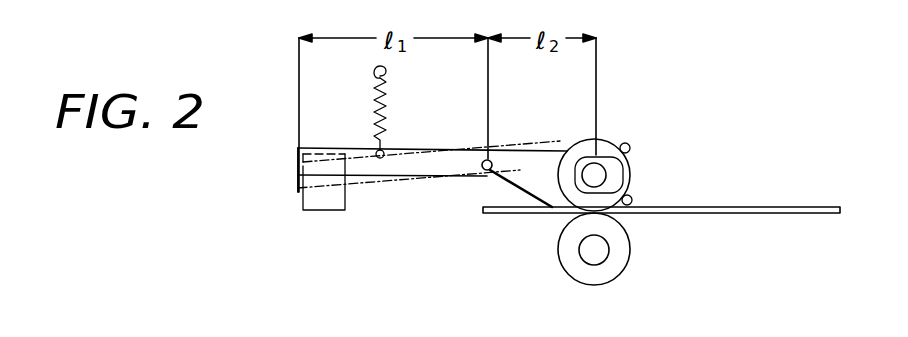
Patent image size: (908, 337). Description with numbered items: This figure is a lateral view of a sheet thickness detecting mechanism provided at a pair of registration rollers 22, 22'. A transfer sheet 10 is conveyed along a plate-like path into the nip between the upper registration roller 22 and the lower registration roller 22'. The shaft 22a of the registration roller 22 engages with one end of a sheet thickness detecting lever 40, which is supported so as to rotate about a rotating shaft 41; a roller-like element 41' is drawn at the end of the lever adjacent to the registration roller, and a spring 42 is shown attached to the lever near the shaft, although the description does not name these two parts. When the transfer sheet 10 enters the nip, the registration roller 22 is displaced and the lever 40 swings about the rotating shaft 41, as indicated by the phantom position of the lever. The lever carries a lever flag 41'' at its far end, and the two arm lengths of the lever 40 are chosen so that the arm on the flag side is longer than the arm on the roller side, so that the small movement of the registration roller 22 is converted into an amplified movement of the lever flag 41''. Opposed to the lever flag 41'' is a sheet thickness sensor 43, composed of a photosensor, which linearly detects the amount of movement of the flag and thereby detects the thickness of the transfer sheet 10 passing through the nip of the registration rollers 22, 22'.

The transfer sheet 10 is at (740, 205).
The registration roller 22 is at (633, 176).
The registration roller 22' is at (630, 249).
The shaft 22a is at (542, 205).
The sheet thickness detecting lever 40 is at (531, 146).
The rotating shaft 41 is at (470, 203).
The roller 41' is at (622, 155).
The lever flag 41'' is at (322, 139).
The spring 42 is at (390, 131).
The sheet thickness sensor 43 is at (323, 212).